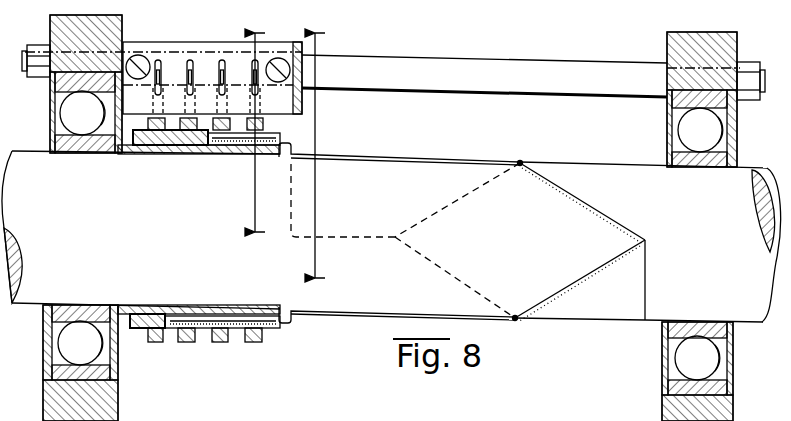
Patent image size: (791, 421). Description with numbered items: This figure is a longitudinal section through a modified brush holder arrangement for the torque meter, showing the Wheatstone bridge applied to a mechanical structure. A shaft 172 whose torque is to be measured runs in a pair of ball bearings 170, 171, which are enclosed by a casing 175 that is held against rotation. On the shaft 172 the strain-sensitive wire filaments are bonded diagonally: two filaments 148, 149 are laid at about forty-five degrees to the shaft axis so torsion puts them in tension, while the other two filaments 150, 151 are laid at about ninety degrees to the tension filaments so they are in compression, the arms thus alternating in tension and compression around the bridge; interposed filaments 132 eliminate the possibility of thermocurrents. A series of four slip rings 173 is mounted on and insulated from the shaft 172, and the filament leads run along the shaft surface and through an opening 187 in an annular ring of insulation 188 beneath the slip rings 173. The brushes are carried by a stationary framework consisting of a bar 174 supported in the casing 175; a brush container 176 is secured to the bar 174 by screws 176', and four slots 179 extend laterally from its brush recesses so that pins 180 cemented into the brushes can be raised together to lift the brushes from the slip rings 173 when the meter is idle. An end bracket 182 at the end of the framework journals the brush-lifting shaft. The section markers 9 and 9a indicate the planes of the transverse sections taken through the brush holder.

The shaft 172 is at (612, 168).
The interposed filaments 132 is at (478, 160).
The tension filament 148 is at (592, 207).
The compression filament 150 is at (596, 268).
The compression filament 151 is at (471, 191).
The tension filament 149 is at (432, 258).
The casing 175 is at (68, 25).
The ball bearing 170 is at (64, 341).
The ball bearing 171 is at (694, 358).
The brush container 176 is at (247, 78).
The screws 176' is at (208, 47).
The bar 174 is at (378, 62).
The end bracket 182 is at (303, 98).
The slots 179 is at (256, 72).
The pins 180 is at (254, 92).
The opening 187 is at (232, 152).
The annular ring of insulation 188 is at (143, 318).
The slip rings 173 is at (252, 343).
The section line 9- 9 is at (255, 134).
The section line 9a- 9a is at (317, 157).